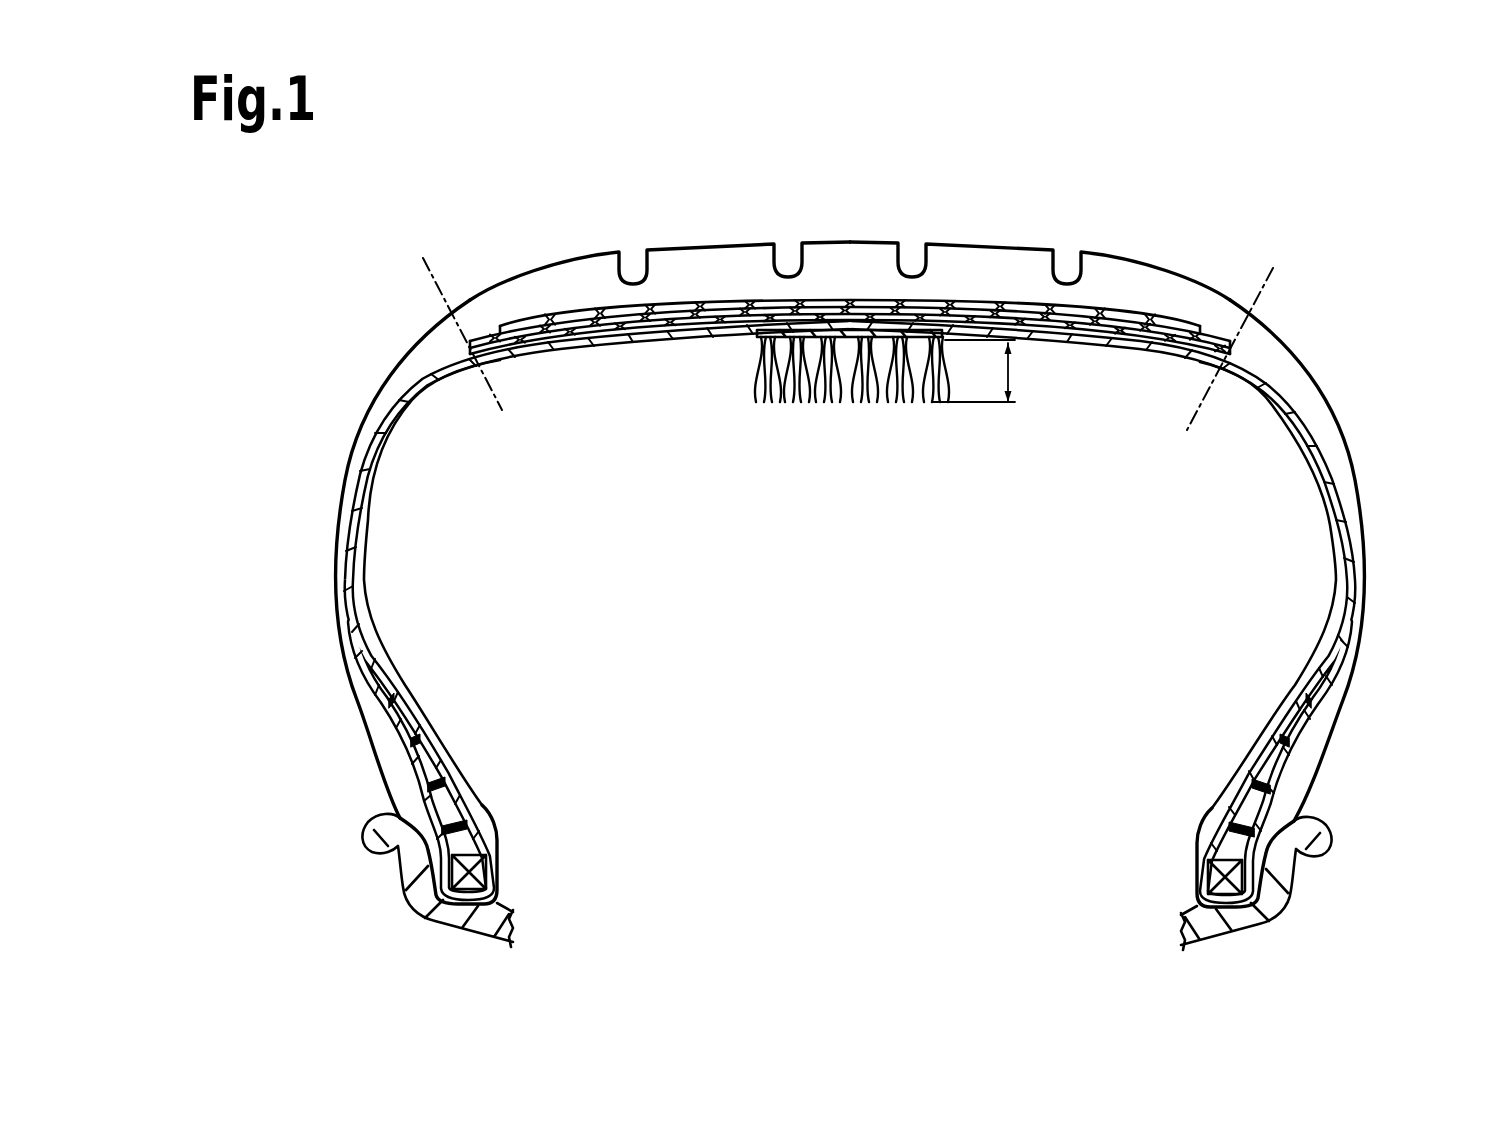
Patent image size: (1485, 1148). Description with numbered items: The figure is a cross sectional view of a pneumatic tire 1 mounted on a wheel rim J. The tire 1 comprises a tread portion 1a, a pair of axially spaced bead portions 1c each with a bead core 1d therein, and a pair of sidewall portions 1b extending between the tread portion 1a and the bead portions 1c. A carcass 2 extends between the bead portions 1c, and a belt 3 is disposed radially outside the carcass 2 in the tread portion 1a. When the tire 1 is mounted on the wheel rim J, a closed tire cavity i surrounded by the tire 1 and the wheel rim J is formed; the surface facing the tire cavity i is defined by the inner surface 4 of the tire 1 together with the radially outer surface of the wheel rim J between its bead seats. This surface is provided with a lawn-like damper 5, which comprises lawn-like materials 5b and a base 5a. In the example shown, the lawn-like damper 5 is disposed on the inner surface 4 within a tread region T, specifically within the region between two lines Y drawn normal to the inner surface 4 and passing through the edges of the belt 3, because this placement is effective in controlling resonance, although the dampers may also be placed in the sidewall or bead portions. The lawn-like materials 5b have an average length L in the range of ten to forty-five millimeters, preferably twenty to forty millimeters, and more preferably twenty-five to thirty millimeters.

The pneumatic tire 1 is at (833, 519).
The tread portion 1a is at (669, 229).
The sidewall portions 1b is at (310, 616).
The bead portions 1c is at (382, 811).
The bead core 1d is at (470, 855).
The carcass 2 is at (362, 488).
The belt 3 is at (572, 312).
The inner surface 4 is at (1307, 453).
The lawn-like damper 5 is at (805, 445).
The base 5a is at (757, 336).
The lawn-like materials 5b is at (852, 424).
The wheel rim J is at (403, 887).
The average length L is at (984, 371).
The tread region T is at (1102, 356).
The lines Y is at (847, 325).
The tire cavity i is at (858, 671).